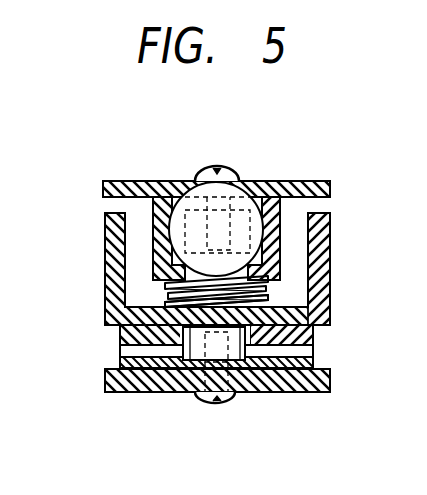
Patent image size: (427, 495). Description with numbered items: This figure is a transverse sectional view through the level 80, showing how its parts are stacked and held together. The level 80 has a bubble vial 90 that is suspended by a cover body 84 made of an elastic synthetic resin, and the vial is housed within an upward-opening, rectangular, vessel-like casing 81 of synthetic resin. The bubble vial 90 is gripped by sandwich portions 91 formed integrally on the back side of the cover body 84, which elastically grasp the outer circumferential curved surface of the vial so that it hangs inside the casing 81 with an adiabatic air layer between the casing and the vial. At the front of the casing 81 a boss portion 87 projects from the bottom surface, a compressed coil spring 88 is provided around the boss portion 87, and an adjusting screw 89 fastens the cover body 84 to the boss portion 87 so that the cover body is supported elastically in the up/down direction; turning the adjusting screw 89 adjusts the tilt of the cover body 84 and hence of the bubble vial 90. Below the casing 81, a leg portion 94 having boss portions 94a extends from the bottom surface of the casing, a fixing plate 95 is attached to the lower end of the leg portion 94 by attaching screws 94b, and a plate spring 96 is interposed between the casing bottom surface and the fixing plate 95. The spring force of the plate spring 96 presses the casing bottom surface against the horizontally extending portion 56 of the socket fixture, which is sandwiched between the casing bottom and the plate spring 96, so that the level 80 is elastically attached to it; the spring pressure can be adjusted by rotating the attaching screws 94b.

The level 80 is at (95, 177).
The casing 81 is at (105, 232).
The cover body 84 is at (312, 182).
The boss portion 87 is at (165, 294).
The compressed coil spring 88 is at (268, 284).
The adjusting screw 89 is at (204, 166).
The bubble vial 90 is at (246, 182).
The sandwich portions 91 is at (153, 247).
The horizontally extending portion 56 is at (313, 333).
The leg portion 94 is at (205, 330).
The boss portions 94a is at (157, 340).
The attaching screws 94b is at (225, 403).
The fixing plate 95 is at (310, 393).
The plate spring 96 is at (313, 363).